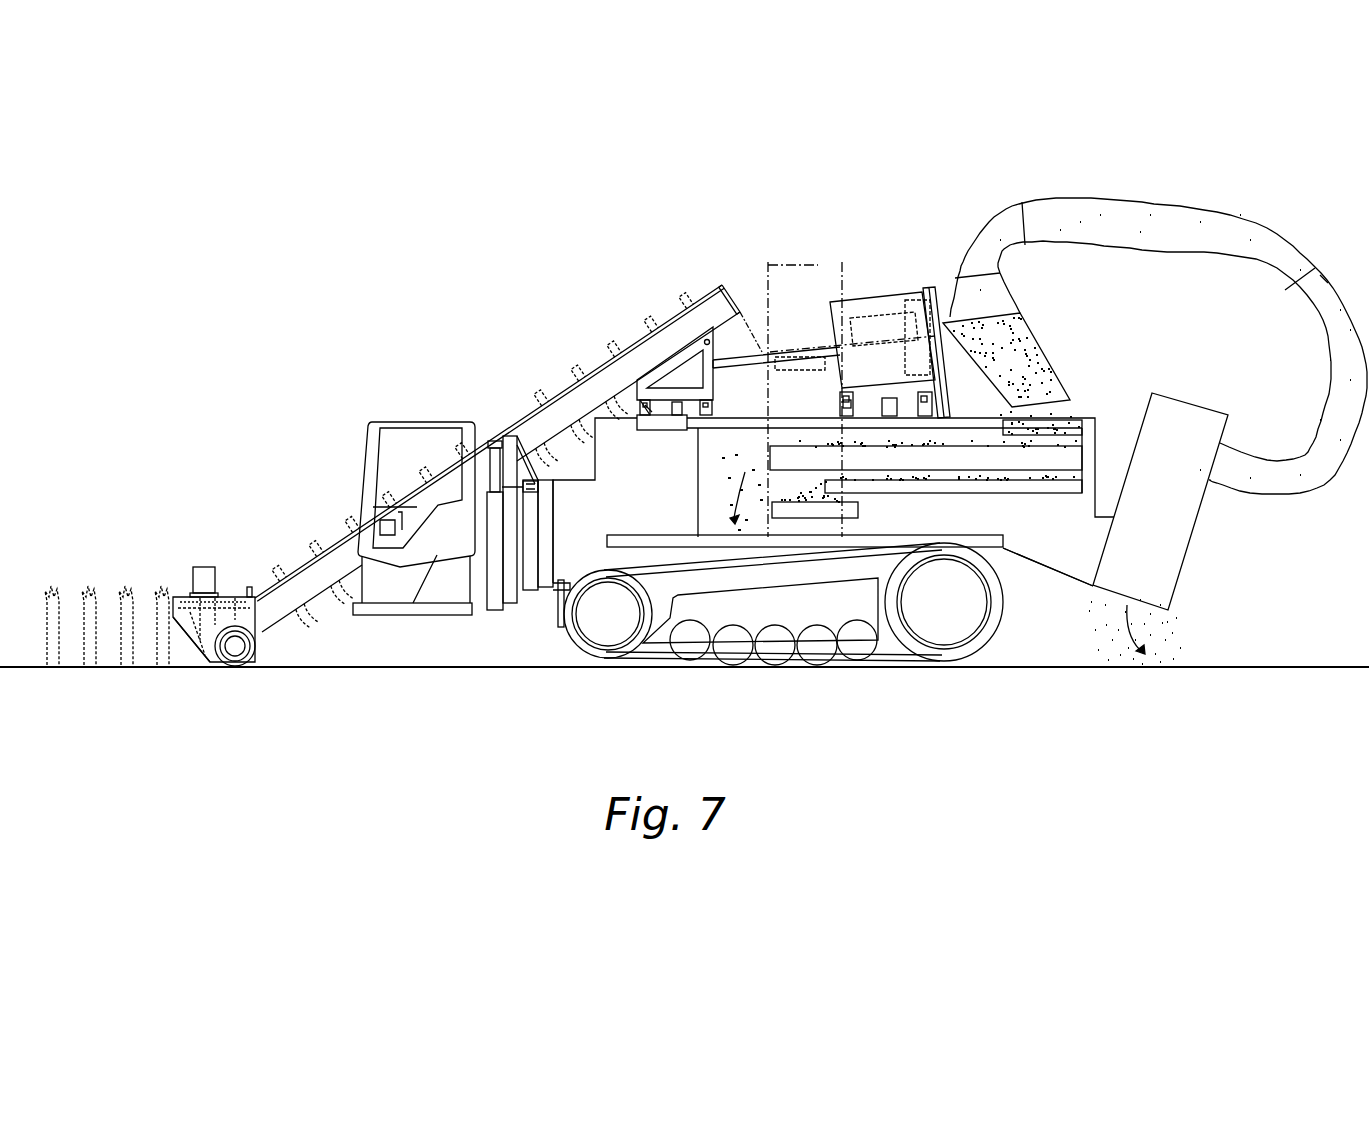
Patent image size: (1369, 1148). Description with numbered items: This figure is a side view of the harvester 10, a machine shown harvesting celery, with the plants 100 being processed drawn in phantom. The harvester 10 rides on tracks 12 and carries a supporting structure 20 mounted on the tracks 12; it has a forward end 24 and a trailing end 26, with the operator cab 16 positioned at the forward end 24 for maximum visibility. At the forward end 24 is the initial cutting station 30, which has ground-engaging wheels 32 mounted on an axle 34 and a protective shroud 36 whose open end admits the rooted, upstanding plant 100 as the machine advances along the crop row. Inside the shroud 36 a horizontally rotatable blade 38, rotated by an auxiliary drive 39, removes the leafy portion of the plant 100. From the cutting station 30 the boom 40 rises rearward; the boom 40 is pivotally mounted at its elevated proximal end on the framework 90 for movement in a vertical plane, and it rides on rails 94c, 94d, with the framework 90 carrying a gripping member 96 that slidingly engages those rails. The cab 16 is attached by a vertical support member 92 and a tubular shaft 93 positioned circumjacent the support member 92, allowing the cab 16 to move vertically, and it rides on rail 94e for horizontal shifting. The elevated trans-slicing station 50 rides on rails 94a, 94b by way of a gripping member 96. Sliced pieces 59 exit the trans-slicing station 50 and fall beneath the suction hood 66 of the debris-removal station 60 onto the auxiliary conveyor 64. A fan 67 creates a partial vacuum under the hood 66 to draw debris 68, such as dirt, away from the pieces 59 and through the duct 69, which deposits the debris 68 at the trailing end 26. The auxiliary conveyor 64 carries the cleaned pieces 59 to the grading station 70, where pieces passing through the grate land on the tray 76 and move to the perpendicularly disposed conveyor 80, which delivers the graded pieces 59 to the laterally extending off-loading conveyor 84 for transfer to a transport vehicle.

The harvester 10 is at (453, 260).
The tracks 12 is at (566, 625).
The operator cab 16 is at (416, 420).
The supporting structure 20 is at (692, 545).
The forward end 24 is at (412, 627).
The trailing end 26 is at (1048, 583).
The initial cutting station 30 is at (226, 598).
The ground-engaging wheels 32 is at (233, 661).
The axle 34 is at (247, 650).
The protective shroud 36 is at (172, 616).
The horizontally rotatable blade 38 is at (186, 600).
The auxiliary drive 39 is at (204, 567).
The boom 40 is at (318, 545).
The trans-slicing station 50 is at (862, 284).
The sliced pieces 59 is at (1058, 362).
The debris-removal station 60 is at (932, 262).
The auxiliary conveyor 64 is at (1080, 422).
The suction hood 66 is at (987, 302).
The fan 67 is at (1165, 548).
The debris 68 is at (1165, 657).
The duct 69 is at (1322, 273).
The grading station 70 is at (1075, 458).
The tray 76 is at (983, 498).
The conveyor 80 is at (858, 508).
The off-loading conveyor 84 is at (815, 265).
The framework 90 is at (690, 350).
The vertical support member 92 is at (478, 450).
The tubular shaft 93 is at (497, 610).
The rail 94a is at (908, 400).
The rail 94b is at (843, 408).
The rail 94c is at (762, 355).
The rail 94d is at (640, 403).
The rail 94e is at (540, 488).
The gripping member 96 is at (946, 400).
The plant 100 is at (95, 592).